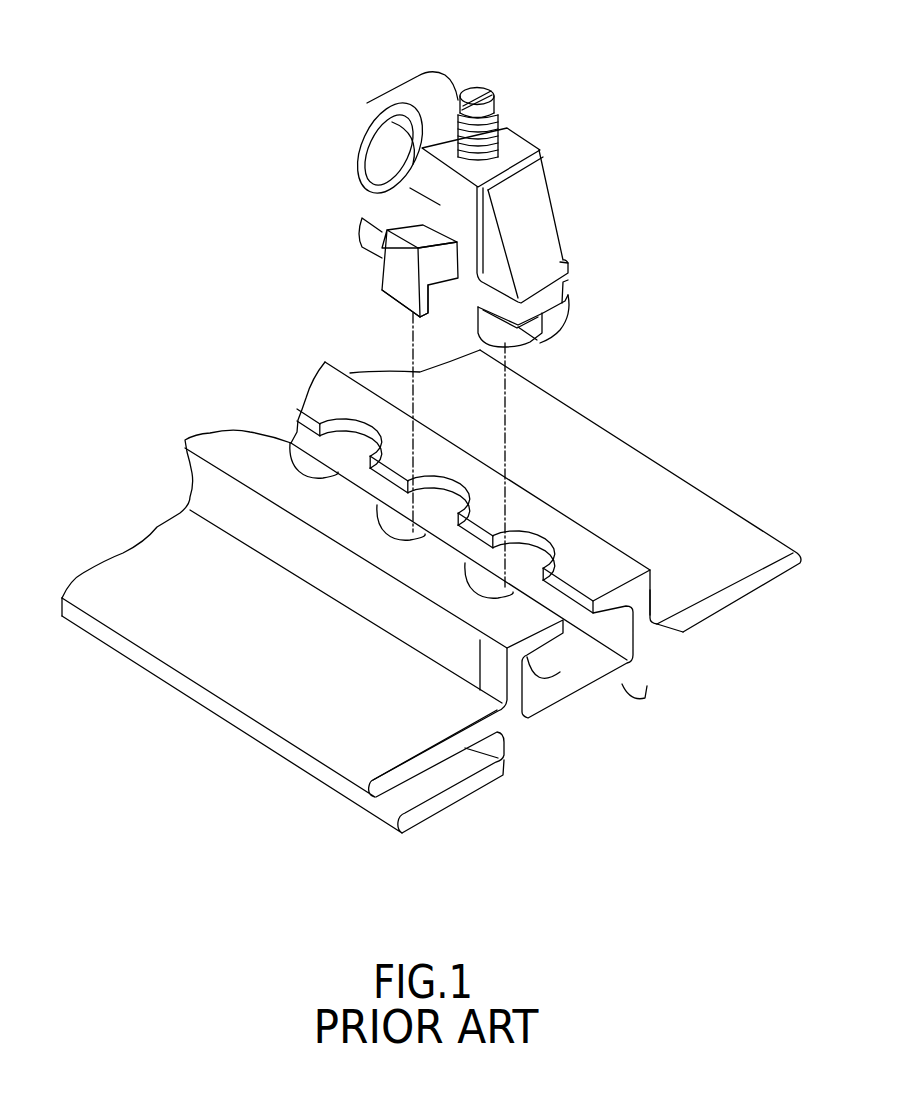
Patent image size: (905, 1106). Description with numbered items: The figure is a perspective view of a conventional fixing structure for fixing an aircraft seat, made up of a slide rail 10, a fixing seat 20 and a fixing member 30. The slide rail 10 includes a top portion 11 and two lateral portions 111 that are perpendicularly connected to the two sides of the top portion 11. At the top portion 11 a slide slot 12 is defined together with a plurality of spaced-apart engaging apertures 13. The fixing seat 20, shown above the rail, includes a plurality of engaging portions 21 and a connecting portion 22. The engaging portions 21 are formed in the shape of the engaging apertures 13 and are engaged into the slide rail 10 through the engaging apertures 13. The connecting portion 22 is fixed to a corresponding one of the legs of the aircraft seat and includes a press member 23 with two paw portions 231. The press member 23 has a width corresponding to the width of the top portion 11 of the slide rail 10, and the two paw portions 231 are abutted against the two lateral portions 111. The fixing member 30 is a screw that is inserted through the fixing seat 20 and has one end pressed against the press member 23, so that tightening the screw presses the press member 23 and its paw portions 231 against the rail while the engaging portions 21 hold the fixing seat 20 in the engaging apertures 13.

The slide rail 10 is at (431, 601).
The top portion 11 is at (630, 567).
The slide slot 12 is at (557, 598).
The engaging apertures 13 is at (523, 540).
The lateral portions 111 is at (475, 668).
The fixing seat 20 is at (464, 206).
The engaging portions 21 is at (510, 333).
The connecting portion 22 is at (375, 137).
The press member 23 is at (408, 242).
The paw portions 231 is at (397, 275).
The fixing member 30 is at (479, 88).